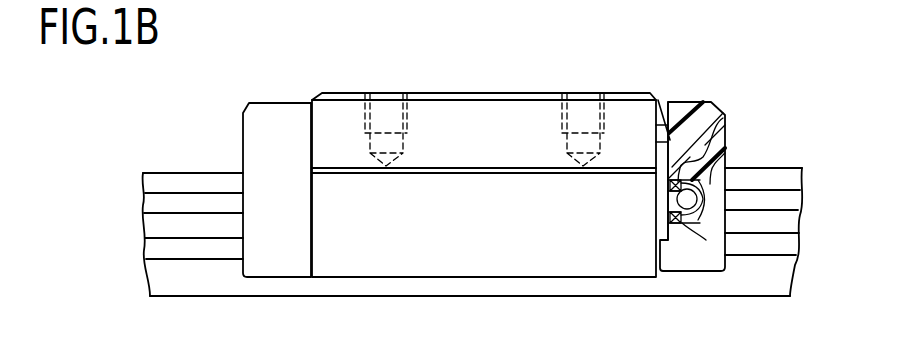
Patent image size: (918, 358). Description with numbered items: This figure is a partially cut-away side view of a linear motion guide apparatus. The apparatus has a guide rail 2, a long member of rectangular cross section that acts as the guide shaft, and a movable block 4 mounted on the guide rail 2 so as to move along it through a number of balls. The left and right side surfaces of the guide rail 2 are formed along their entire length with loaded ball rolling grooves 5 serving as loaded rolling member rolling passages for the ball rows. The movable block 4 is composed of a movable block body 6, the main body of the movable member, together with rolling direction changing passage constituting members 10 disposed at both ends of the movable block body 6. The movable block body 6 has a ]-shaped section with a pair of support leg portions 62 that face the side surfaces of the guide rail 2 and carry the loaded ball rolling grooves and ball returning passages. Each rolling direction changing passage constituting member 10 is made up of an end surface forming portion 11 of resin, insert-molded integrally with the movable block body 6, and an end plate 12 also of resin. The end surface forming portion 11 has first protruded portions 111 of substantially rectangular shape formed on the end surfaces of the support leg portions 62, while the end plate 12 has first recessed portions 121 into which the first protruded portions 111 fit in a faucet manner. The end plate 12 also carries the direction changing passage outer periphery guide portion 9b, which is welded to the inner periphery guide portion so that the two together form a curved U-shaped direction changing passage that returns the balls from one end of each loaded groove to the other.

The guide rail 2 is at (464, 170).
The movable block 4 is at (521, 90).
The loaded ball rolling groove 5 is at (158, 250).
The movable block body 6 is at (470, 115).
The support leg portion 62 is at (469, 83).
The rolling direction changing passage constituting member 10 is at (283, 98).
The end surface forming portion 11 is at (664, 102).
The end plate 12 is at (257, 117).
The first protruded portion 111 is at (723, 124).
The first recessed portion 121 is at (725, 160).
The direction changing passage outer periphery guide portion 9b is at (700, 222).